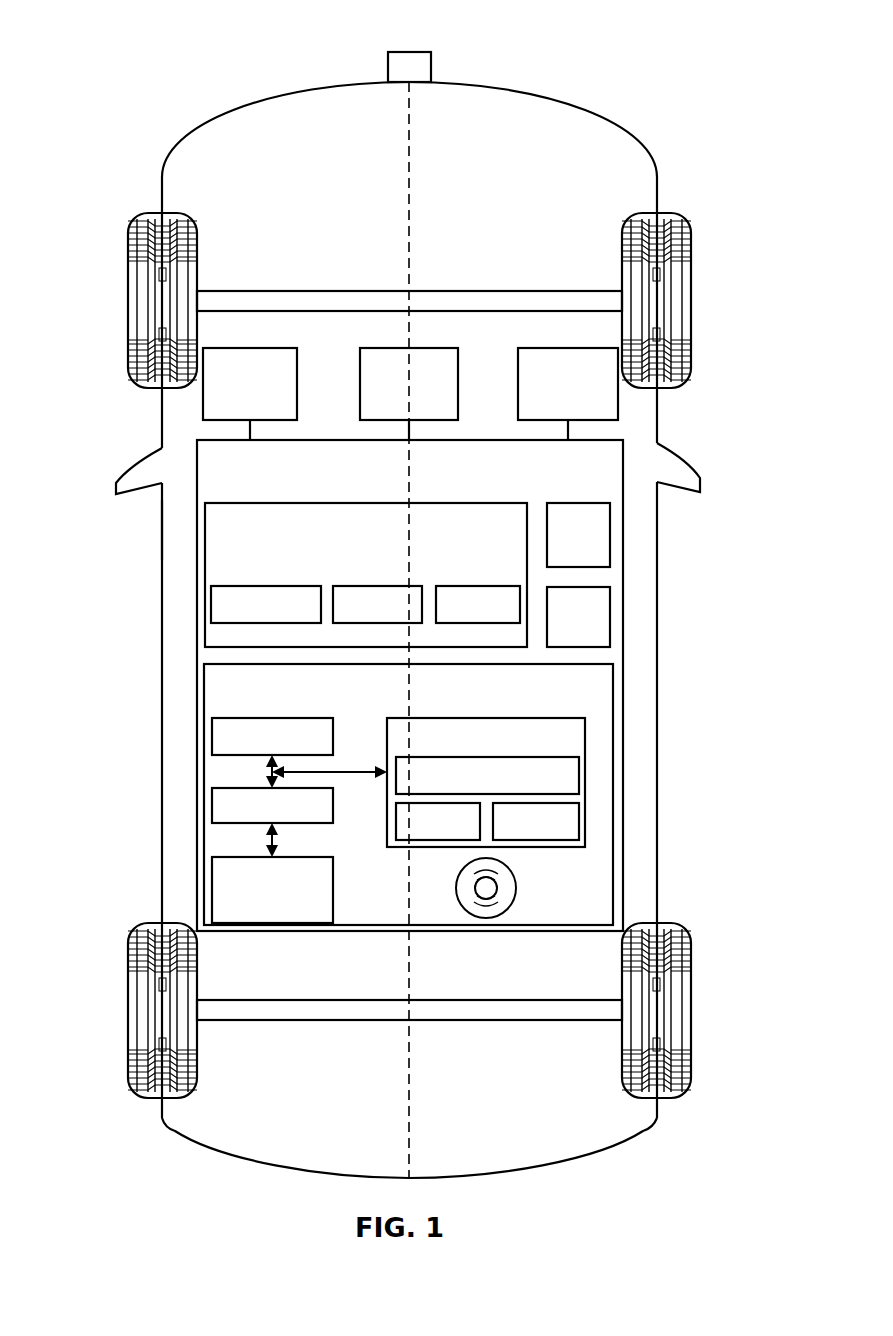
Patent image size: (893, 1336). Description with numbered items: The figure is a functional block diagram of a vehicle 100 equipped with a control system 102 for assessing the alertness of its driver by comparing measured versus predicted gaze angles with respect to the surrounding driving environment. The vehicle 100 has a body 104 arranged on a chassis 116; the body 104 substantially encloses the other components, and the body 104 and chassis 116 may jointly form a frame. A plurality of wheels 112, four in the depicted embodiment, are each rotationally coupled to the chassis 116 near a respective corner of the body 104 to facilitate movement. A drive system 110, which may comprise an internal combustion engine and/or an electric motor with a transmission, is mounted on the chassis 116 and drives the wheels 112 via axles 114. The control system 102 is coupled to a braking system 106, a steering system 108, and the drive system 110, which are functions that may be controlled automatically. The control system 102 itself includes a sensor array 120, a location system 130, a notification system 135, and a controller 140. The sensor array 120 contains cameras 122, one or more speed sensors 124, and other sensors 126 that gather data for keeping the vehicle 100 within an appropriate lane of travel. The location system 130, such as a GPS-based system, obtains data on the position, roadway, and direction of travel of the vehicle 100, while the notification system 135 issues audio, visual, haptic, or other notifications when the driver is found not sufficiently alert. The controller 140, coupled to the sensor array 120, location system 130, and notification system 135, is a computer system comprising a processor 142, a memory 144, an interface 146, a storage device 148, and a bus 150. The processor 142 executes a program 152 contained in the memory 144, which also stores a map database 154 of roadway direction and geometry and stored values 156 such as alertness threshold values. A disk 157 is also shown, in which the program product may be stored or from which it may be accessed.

The vehicle 100 is at (657, 66).
The control system 102 is at (625, 452).
The body 104 is at (163, 535).
The braking system 106 is at (272, 347).
The steering system 108 is at (385, 347).
The drive system 110 is at (530, 348).
The wheels 112 is at (128, 282).
The axles 114 is at (277, 1009).
The chassis 116 is at (418, 132).
The sensor array 120 is at (517, 503).
The cameras 122 is at (250, 586).
The speed sensors 124 is at (352, 586).
The other sensors 126 is at (450, 586).
The location system 130 is at (610, 550).
The notification system 135 is at (610, 630).
The controller 140 is at (204, 690).
The processor 142 is at (212, 735).
The memory 144 is at (585, 727).
The interface 146 is at (212, 808).
The storage device 148 is at (212, 870).
The bus 150 is at (272, 772).
The program 152 is at (579, 770).
The map database 154 is at (448, 847).
The stored values 156 is at (579, 815).
The disk 157 is at (516, 888).